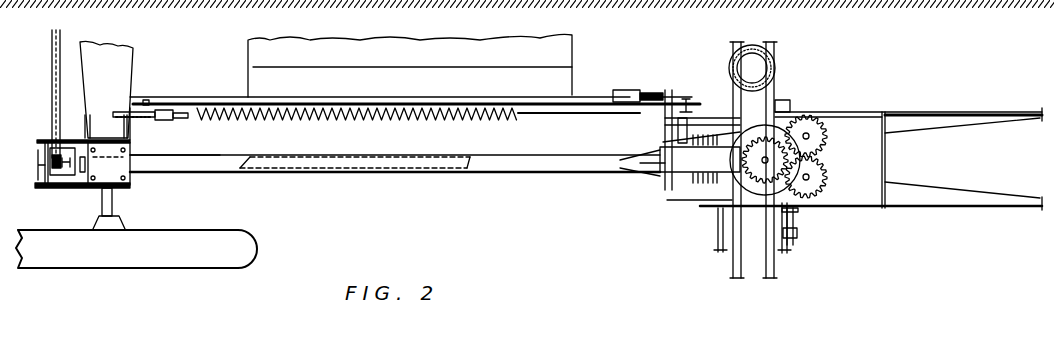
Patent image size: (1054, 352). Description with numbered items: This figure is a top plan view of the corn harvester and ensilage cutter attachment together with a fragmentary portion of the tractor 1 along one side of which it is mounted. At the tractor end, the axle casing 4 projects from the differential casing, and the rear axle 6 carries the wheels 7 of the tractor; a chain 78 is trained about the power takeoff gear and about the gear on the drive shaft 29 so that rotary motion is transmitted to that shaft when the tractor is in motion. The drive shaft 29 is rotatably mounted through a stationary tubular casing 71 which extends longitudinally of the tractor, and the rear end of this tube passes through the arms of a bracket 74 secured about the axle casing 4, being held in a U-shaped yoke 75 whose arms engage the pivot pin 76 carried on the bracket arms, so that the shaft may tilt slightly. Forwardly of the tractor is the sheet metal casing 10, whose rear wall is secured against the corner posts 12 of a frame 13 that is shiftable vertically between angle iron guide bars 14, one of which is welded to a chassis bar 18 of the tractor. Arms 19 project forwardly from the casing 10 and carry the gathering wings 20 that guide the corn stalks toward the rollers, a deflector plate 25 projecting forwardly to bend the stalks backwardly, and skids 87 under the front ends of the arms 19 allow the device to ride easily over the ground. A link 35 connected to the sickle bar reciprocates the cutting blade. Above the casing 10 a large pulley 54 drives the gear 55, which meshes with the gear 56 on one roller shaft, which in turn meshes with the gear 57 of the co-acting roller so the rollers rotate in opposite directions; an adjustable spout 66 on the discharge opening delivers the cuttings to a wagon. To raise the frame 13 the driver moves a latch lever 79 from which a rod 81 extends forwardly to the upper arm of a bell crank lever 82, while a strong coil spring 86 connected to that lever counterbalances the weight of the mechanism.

The tractor 1 is at (494, 38).
The axle casing 4 is at (133, 78).
The rear axle 6 is at (112, 200).
The wheels 7 is at (195, 258).
The casing 10 is at (733, 15).
The corner posts 12 is at (728, 110).
The frame 13 is at (703, 203).
The guide bars 14 is at (630, 60).
The chassis bar 18 is at (585, 120).
The arms 19 is at (862, 15).
The gathering wings 20 is at (933, 118).
The deflector plate 25 is at (868, 125).
The drive shaft 29 is at (397, 162).
The link 35 is at (793, 240).
The large pulley 54 is at (746, 163).
The gear 55 is at (765, 160).
The gear 56 is at (823, 182).
The gear 57 is at (827, 117).
The adjustable spout 66 is at (767, 63).
The tubular casing 71 is at (202, 165).
The bracket 74 is at (120, 167).
The yoke 75 is at (67, 142).
The pivot pin 76 is at (45, 165).
The chain 78 is at (50, 84).
The latch lever 79 is at (177, 107).
The rod 81 is at (340, 92).
The bell crank lever 82 is at (677, 90).
The coil spring 86 is at (293, 122).
The skids 87 is at (1017, 0).